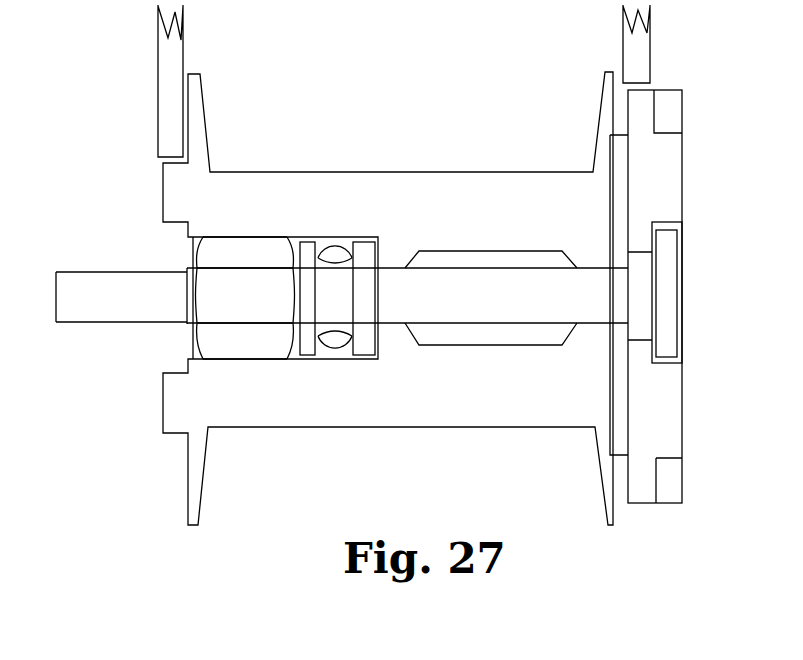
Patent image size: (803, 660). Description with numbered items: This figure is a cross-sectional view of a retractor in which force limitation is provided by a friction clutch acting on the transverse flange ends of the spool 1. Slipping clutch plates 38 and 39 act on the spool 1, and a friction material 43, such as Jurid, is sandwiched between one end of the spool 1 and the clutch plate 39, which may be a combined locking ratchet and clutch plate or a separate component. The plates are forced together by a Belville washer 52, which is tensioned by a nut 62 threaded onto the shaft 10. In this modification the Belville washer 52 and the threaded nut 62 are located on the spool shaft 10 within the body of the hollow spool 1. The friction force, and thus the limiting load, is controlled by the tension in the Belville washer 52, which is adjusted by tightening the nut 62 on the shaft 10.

The spool 1 is at (265, 407).
The shaft 10 is at (473, 283).
The slipping clutch plate 38 is at (170, 70).
The clutch plate 39 is at (663, 178).
The friction material 43 is at (607, 180).
The Belville washer 52 is at (340, 245).
The nut 62 is at (262, 247).